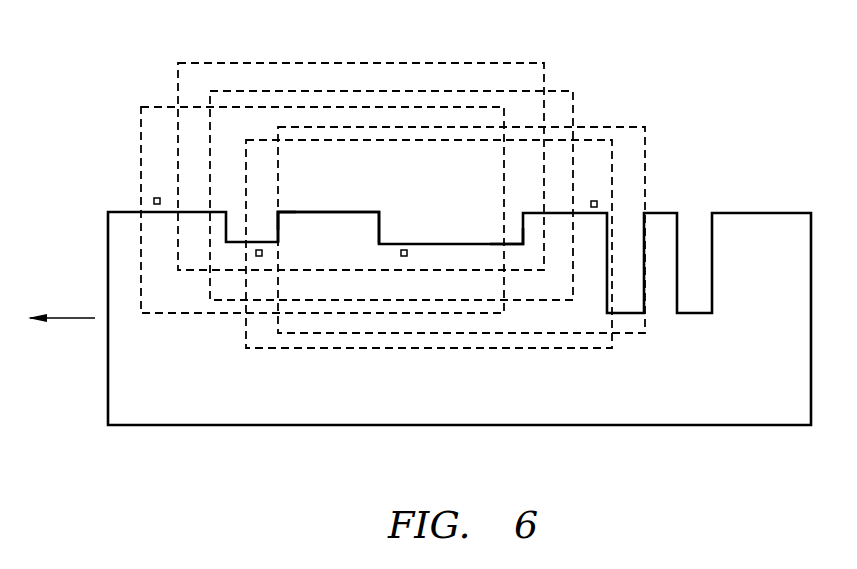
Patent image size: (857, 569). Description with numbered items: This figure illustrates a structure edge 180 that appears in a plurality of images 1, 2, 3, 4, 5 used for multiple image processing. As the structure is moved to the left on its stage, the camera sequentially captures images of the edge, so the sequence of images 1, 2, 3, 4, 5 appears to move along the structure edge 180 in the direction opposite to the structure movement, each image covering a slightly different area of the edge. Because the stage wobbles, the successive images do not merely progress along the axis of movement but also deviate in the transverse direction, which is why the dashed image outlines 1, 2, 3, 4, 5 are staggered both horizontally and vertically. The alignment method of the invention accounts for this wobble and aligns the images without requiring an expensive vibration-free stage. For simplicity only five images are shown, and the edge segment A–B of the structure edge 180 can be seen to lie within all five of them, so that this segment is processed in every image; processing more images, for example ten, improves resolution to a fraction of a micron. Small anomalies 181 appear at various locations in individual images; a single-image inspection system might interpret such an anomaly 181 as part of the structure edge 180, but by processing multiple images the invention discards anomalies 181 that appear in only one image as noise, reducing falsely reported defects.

The image 1 is at (309, 196).
The image 2 is at (348, 153).
The image 3 is at (378, 183).
The image 4 is at (415, 232).
The image 5 is at (447, 221).
The structure edge 180 is at (373, 210).
The anomaly 181 is at (154, 200).
The edge segment endpoint A is at (280, 210).
The edge segment endpoint B is at (503, 243).